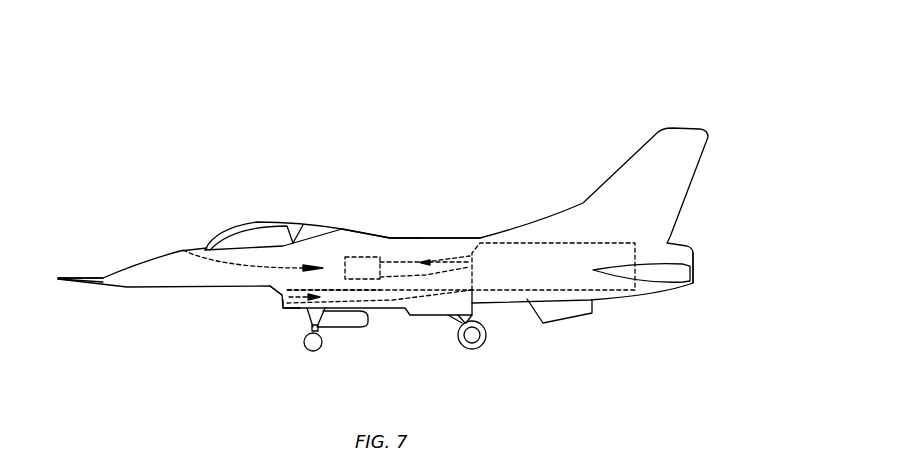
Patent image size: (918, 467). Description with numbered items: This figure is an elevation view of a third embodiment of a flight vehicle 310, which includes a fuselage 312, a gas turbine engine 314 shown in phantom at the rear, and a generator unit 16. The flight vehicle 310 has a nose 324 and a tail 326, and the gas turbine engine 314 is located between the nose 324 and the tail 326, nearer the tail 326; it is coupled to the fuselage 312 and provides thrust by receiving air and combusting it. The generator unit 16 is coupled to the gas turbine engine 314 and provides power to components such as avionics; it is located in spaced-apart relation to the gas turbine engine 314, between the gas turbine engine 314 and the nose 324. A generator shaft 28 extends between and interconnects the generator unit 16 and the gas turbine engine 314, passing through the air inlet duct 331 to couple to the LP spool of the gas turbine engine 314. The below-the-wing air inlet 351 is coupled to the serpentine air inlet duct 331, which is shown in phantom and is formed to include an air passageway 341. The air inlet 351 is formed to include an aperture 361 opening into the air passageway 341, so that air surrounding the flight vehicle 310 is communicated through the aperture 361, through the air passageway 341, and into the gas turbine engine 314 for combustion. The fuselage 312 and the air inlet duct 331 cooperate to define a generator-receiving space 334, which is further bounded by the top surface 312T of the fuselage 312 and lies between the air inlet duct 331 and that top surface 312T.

The flight vehicle 310 is at (752, 75).
The nose 324 is at (60, 268).
The generator-receiving space 334 is at (183, 250).
The top surface of the fuselage 312T is at (358, 230).
The generator unit 16 is at (380, 236).
The fuselage 312 is at (434, 225).
The generator shaft 28 is at (449, 252).
The gas turbine engine 314 is at (584, 226).
The tail 326 is at (706, 265).
The aperture 361 is at (280, 296).
The air passageway 341 is at (283, 302).
The air inlet 351 is at (285, 326).
The air inlet duct 331 is at (396, 302).